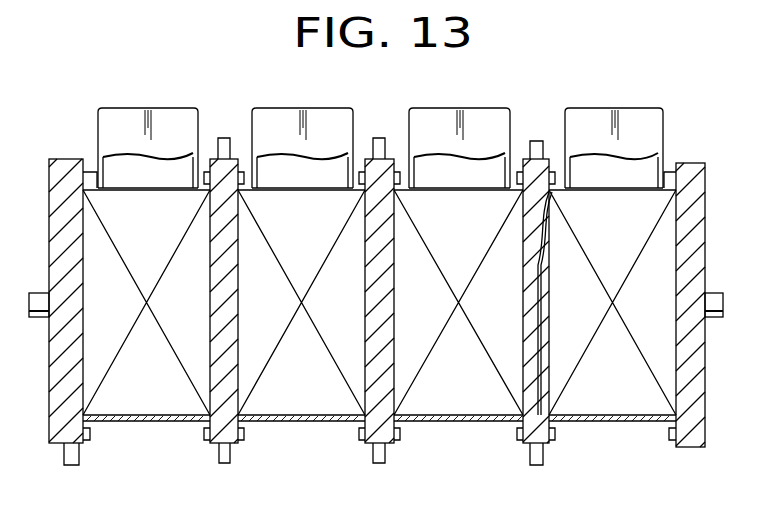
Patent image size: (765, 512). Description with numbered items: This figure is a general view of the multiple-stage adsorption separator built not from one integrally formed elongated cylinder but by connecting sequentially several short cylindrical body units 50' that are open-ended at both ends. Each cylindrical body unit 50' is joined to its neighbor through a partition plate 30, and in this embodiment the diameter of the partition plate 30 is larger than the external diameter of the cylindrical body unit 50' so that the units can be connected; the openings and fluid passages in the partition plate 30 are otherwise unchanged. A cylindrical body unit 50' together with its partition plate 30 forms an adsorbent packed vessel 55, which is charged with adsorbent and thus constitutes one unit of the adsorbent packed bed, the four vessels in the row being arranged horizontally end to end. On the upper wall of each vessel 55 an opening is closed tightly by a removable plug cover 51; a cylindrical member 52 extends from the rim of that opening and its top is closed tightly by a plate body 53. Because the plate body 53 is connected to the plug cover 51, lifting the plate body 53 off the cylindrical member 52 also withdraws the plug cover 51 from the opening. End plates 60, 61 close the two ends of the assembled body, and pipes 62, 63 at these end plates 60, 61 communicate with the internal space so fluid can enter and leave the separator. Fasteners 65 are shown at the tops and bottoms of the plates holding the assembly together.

The partition plate 30 is at (220, 298).
The cylindrical body unit 50' is at (379, 439).
The plug cover 51 is at (452, 190).
The cylindrical member 52 is at (497, 165).
The plate body 53 is at (458, 108).
The adsorbent packed vessel 55 is at (470, 360).
The end plate 60 is at (692, 432).
The end plate 61 is at (58, 418).
The pipe 62 is at (714, 318).
The pipe 63 is at (38, 318).
The bolt 65 is at (226, 138).